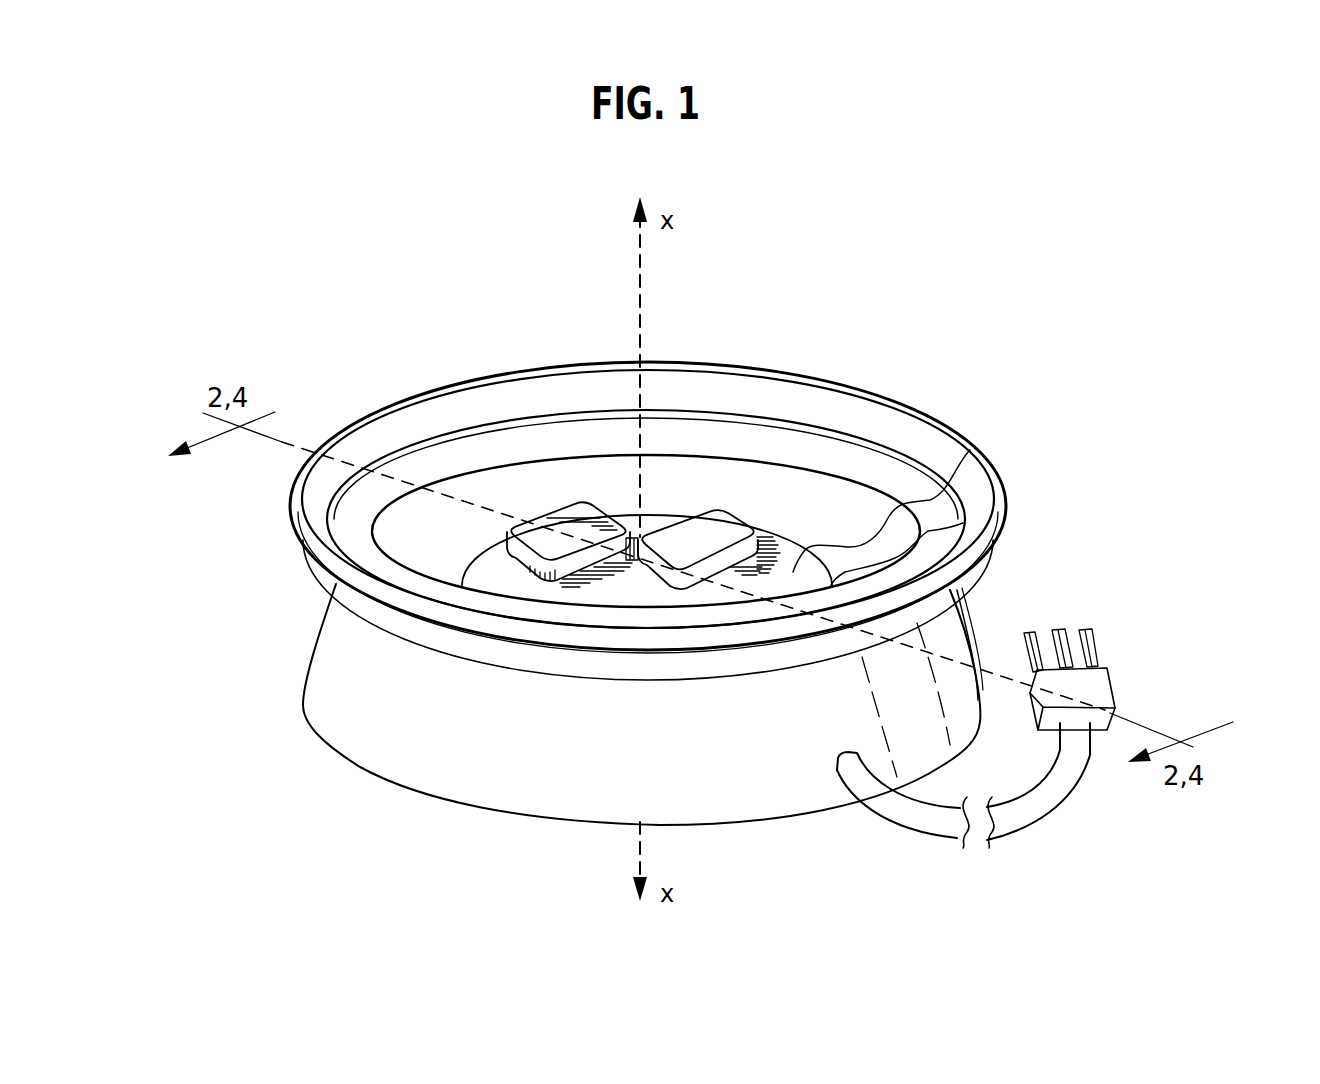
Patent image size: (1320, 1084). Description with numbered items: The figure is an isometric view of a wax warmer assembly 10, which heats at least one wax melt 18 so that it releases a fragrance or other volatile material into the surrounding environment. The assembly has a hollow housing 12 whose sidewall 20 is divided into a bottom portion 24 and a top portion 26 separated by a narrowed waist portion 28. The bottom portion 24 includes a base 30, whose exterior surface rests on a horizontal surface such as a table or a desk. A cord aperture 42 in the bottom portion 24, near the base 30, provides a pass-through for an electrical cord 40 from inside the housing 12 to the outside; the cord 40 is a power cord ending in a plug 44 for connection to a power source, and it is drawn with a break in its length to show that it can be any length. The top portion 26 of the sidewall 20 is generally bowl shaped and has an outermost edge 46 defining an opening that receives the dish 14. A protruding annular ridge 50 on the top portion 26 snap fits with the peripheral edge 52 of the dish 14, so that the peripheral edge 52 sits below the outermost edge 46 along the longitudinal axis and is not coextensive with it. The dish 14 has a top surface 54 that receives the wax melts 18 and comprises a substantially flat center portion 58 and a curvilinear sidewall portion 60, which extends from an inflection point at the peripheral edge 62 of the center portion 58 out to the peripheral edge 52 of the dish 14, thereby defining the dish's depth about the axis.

The wax warmer assembly 10 is at (284, 226).
The housing 12 is at (302, 695).
The dish 14 is at (684, 428).
The wax melt 18 is at (588, 512).
The sidewall 20 is at (340, 660).
The bottom portion 24 is at (353, 723).
The top portion 26 is at (305, 540).
The narrowed waist portion 28 is at (950, 603).
The base 30 is at (490, 810).
The electrical cord 40 is at (950, 840).
The cord aperture 42 is at (840, 758).
The plug 44 is at (1095, 683).
The outermost edge 46 is at (458, 378).
The annular ridge 50 is at (527, 418).
The peripheral edge 52 is at (337, 478).
The top surface 54 is at (880, 472).
The center portion 58 is at (975, 452).
The sidewall portion 60 is at (745, 442).
The peripheral edge of the flat center portion 62 is at (1000, 533).